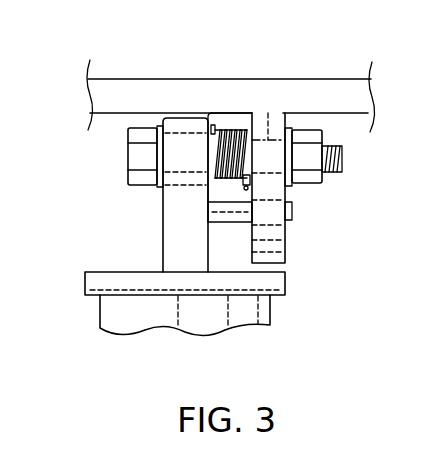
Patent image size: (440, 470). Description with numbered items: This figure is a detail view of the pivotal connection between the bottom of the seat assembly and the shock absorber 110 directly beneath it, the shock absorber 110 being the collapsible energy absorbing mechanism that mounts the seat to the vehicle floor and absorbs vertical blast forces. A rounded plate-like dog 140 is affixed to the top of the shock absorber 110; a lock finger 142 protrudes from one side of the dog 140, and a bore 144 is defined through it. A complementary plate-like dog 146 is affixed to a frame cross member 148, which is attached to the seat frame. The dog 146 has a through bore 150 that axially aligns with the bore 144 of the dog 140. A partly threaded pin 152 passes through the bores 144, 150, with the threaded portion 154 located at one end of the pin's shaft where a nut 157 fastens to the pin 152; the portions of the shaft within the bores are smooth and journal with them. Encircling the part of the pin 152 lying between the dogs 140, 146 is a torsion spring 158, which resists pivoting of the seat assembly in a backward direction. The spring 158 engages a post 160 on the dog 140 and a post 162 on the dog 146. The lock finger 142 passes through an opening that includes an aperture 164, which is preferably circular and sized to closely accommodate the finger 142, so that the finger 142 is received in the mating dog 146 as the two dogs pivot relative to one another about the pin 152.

The shock absorber 110 is at (102, 314).
The dog 140 is at (175, 113).
The lock finger 142 is at (228, 222).
The bore 144 is at (345, 160).
The dog 146 is at (288, 230).
The frame cross member 148 is at (330, 79).
The through bore 150 is at (268, 138).
The partly threaded pin 152 is at (128, 148).
The threaded portion 154 is at (333, 175).
The nut 157 is at (308, 185).
The torsion spring 158 is at (237, 127).
The post 160 is at (220, 125).
The post 162 is at (215, 183).
The aperture 164 is at (267, 223).